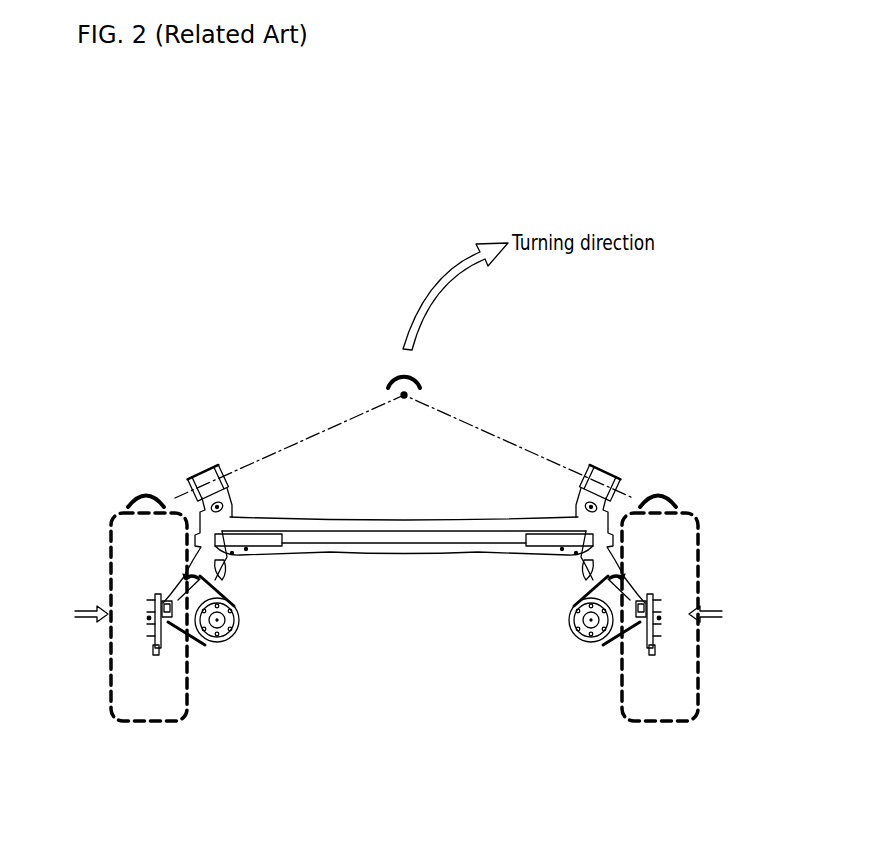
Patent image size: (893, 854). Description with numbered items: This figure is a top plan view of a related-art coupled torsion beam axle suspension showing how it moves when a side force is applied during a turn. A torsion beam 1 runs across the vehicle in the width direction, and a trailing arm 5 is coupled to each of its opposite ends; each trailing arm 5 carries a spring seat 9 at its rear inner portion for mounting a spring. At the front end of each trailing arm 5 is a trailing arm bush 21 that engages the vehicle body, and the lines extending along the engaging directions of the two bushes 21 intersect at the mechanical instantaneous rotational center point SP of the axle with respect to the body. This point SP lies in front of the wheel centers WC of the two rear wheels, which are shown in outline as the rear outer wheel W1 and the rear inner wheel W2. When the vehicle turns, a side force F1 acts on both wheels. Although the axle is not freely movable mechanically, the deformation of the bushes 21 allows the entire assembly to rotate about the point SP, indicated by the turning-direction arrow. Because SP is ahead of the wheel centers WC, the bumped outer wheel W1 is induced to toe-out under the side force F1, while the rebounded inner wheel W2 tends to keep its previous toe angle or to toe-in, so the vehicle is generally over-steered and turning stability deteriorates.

The torsion beam 1 is at (404, 553).
The trailing arm 5 is at (223, 574).
The spring seat 9 is at (236, 628).
The trailing arm bush 21 is at (205, 469).
The instantaneous rotational center point SP is at (404, 399).
The wheel center WC is at (147, 620).
The rear outer wheel W1 is at (157, 727).
The rear inner wheel W2 is at (668, 727).
The side force F1 is at (400, 614).